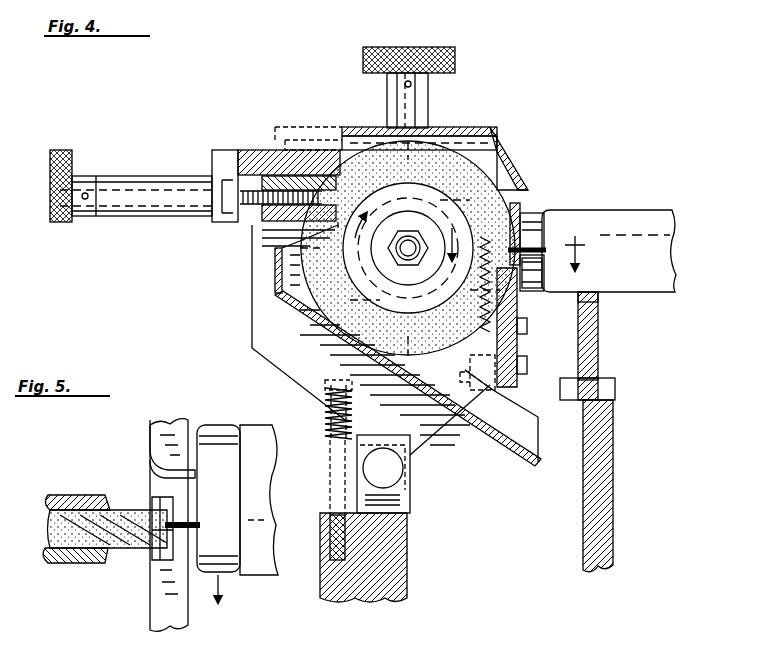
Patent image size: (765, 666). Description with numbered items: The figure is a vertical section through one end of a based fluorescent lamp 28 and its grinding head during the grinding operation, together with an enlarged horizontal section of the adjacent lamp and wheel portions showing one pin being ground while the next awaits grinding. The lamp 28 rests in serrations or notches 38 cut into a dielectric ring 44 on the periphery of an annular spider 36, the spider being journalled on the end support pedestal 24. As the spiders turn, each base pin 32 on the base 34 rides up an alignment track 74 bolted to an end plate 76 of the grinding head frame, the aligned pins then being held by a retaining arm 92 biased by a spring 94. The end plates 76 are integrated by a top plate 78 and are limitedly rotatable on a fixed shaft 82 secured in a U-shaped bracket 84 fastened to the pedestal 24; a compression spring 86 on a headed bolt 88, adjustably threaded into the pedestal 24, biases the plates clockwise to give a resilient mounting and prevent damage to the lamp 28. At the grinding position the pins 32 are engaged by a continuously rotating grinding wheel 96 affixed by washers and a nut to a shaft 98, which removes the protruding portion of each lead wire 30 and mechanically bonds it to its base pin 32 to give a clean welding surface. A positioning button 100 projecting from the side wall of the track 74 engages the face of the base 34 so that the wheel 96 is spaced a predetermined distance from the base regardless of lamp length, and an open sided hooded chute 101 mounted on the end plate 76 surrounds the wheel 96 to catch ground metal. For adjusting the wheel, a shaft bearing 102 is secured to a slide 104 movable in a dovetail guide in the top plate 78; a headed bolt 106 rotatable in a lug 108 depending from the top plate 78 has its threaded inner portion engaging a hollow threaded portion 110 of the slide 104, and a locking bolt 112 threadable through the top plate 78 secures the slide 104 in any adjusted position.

In FIG. 4, the end support pedestal 24 is at (395, 590).
In FIG. 4, the based fluorescent lamp 28 is at (614, 215).
In FIG. 5, the based fluorescent lamp 28 is at (265, 430).
In FIG. 5, the lead wire 30 is at (150, 452).
In FIG. 4, the base pin 32 is at (522, 250).
In FIG. 5, the base pin 32 is at (193, 520).
In FIG. 4, the base 34 is at (530, 287).
In FIG. 5, the base 34 is at (225, 432).
In FIG. 4, the annular spider 36 is at (613, 420).
In FIG. 4, the serrations or notches 38 is at (598, 294).
In FIG. 4, the ring 44 is at (598, 340).
In FIG. 4, the alignment track 74 is at (520, 350).
In FIG. 5, the alignment track 74 is at (178, 628).
In FIG. 4, the end plate 76 is at (278, 322).
In FIG. 4, the top plate 78 is at (265, 150).
In FIG. 4, the fixed shaft 82 is at (395, 472).
In FIG. 4, the U-shaped bracket 84 is at (410, 500).
In FIG. 4, the compression spring 86 is at (338, 470).
In FIG. 4, the headed bolt 88 is at (340, 392).
In FIG. 4, the retaining arm 92 is at (520, 205).
In FIG. 4, the spring 94 is at (470, 358).
In FIG. 4, the grinding wheel 96 is at (465, 182).
In FIG. 5, the grinding wheel 96 is at (115, 548).
In FIG. 4, the shaft 98 is at (398, 258).
In FIG. 4, the positioning button 100 is at (535, 258).
In FIG. 5, the positioning button 100 is at (240, 572).
In FIG. 4, the hooded chute 101 is at (492, 127).
In FIG. 4, the shaft bearing 102 is at (452, 127).
In FIG. 4, the slide 104 is at (275, 228).
In FIG. 4, the headed bolt 106 is at (130, 185).
In FIG. 4, the lug 108 is at (218, 155).
In FIG. 4, the hollow threaded portion 110 is at (262, 208).
In FIG. 4, the locking bolt 112 is at (455, 58).